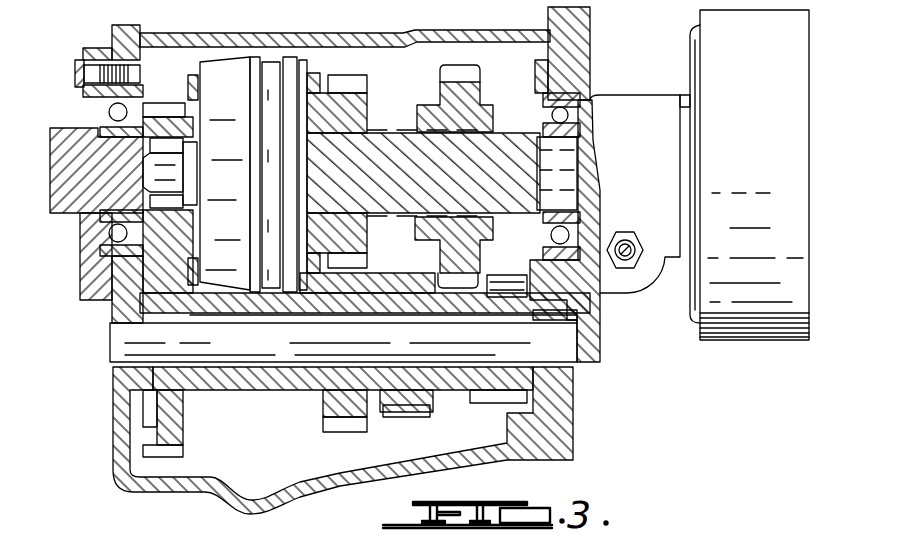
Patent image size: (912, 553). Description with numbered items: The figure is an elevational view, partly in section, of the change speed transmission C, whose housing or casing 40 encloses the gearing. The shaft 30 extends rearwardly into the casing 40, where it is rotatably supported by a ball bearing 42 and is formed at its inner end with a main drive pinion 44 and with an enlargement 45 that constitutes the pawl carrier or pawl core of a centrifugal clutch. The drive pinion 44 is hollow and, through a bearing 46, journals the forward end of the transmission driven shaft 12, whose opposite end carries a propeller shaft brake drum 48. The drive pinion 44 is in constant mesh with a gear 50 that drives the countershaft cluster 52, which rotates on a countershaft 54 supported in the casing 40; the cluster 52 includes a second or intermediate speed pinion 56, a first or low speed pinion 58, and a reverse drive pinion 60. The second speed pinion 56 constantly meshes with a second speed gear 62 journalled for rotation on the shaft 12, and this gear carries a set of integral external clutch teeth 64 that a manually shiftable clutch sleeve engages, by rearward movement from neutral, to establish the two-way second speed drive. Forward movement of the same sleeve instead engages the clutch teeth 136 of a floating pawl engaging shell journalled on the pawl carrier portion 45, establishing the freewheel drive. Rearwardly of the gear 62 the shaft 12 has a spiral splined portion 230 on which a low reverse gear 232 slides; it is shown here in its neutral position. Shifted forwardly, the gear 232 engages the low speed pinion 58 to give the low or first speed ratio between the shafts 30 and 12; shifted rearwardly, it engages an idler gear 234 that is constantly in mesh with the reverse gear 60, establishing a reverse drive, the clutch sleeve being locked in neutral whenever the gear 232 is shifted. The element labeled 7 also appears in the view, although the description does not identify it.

The clutch drum 7 is at (236, 65).
The transmission driven shaft 12 is at (506, 181).
The shaft 30 is at (80, 179).
The housing or casing 40 is at (457, 30).
The ball bearing 42 is at (81, 268).
The main drive pinion 44 is at (156, 110).
The enlargement 45 is at (198, 104).
The bearing 46 is at (185, 198).
The propeller shaft brake drum 48 is at (735, 336).
The gear 50 is at (174, 452).
The countershaft cluster 52 is at (300, 392).
The countershaft 54 is at (236, 346).
The second or intermediate speed pinion 56 is at (340, 432).
The first or low speed pinion 58 is at (392, 418).
The reverse drive pinion 60 is at (490, 402).
The second speed gear 62 is at (348, 80).
The external clutch teeth 64 is at (313, 72).
The clutch teeth 136 is at (193, 73).
The spiral splined portion 230 is at (502, 128).
The low reverse gear 232 is at (462, 68).
The idler gear 234 is at (510, 285).
The change speed transmission C is at (301, 50).